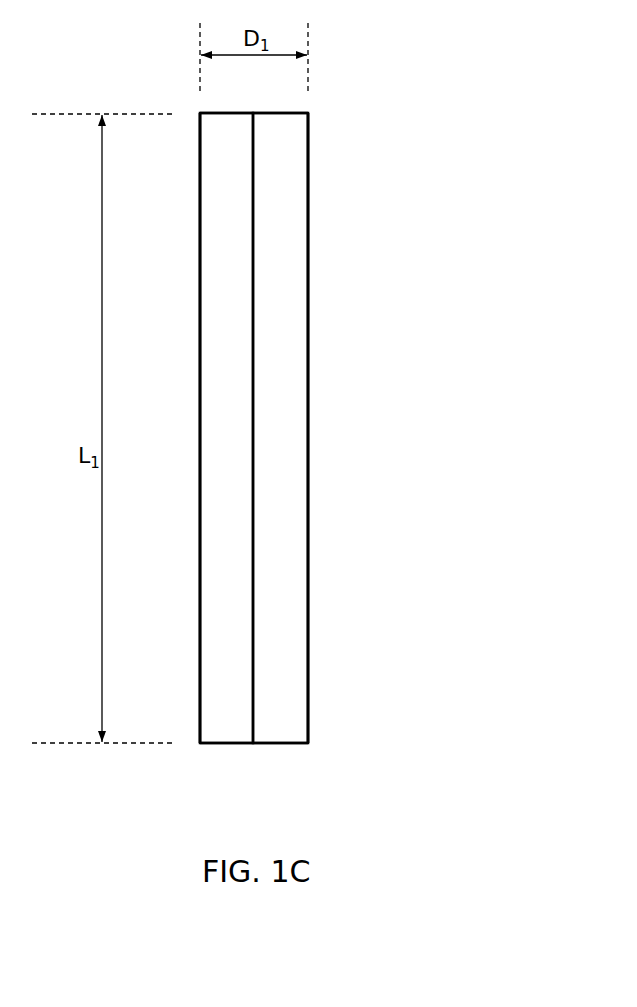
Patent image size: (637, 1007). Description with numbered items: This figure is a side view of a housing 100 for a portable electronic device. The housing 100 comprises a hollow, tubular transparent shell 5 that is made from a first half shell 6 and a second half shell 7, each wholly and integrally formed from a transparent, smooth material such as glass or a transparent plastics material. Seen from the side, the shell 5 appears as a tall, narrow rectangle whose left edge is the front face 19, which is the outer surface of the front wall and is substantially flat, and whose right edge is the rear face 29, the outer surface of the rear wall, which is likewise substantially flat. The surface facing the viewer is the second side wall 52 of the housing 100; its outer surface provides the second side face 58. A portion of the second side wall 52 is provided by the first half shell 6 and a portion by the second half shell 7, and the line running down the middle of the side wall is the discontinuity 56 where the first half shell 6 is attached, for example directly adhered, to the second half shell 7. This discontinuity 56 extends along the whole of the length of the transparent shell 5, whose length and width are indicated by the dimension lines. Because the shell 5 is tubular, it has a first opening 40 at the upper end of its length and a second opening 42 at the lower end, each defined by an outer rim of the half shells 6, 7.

The housing 100 is at (300, 442).
The transparent shell 5 is at (400, 593).
The first half shell 6 is at (170, 200).
The second half shell 7 is at (335, 245).
The front face 19 is at (200, 340).
The rear face 29 is at (309, 328).
The first opening 40 is at (287, 105).
The second opening 42 is at (257, 780).
The second side wall 52 is at (238, 560).
The discontinuity 56 is at (254, 432).
The second side face 58 is at (275, 492).